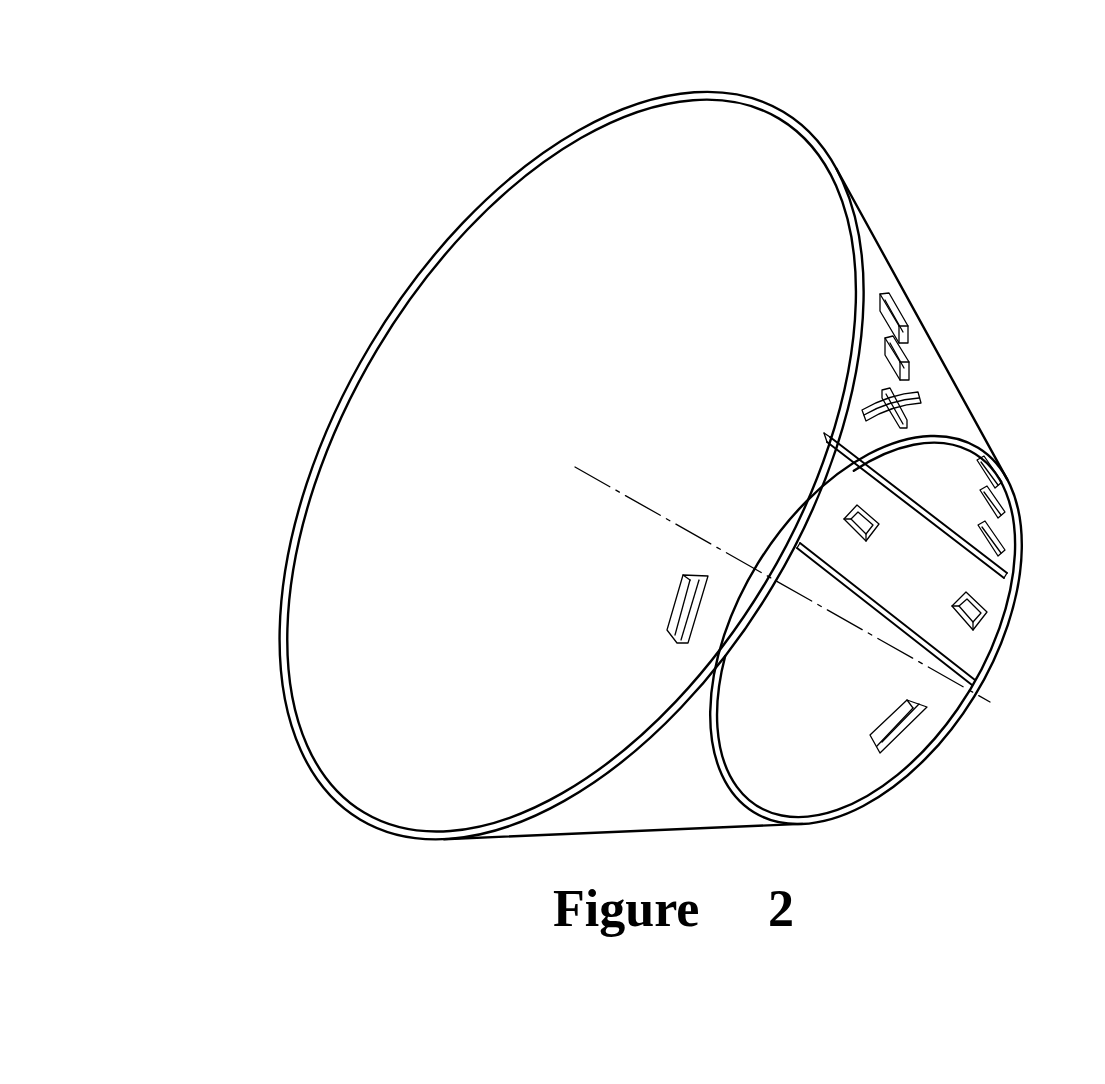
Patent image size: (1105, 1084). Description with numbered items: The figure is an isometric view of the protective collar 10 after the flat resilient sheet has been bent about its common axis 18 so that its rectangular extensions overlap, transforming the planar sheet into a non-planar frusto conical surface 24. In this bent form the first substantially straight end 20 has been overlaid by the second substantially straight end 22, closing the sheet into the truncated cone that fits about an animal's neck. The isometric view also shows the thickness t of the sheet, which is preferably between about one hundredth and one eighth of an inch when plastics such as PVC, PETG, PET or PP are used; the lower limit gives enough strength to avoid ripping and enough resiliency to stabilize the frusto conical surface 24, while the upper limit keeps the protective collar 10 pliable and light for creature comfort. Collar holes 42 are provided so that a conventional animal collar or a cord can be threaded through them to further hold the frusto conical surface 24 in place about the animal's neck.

The protective collar 10 is at (352, 204).
The central axis 18 is at (623, 493).
The first substantially straight end 20 is at (822, 480).
The second substantially straight end 22 is at (1000, 650).
The frusto conical surface 24 is at (944, 270).
The collar holes 42 is at (905, 406).
The thickness t is at (315, 255).